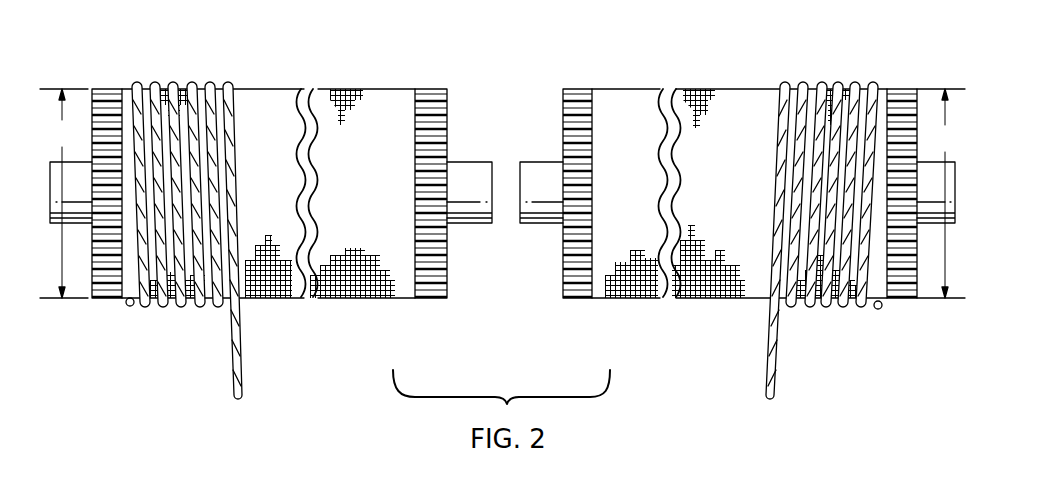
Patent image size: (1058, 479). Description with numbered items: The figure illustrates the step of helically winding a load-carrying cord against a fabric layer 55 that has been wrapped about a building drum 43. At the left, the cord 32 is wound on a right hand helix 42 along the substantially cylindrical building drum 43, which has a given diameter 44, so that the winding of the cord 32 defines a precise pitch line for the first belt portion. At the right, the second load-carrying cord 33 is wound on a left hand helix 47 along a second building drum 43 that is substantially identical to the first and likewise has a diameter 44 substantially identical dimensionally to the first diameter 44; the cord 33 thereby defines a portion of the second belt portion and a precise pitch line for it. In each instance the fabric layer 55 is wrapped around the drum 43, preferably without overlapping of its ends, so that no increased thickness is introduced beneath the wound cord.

The load-carrying cord 32 is at (230, 345).
The second load-carrying cord 33 is at (777, 357).
The right hand helix 42 is at (236, 77).
The building drum 43 is at (105, 87).
The diameter 44 is at (502, 193).
The left hand helix 47 is at (778, 76).
The fabric layer 55 is at (353, 88).